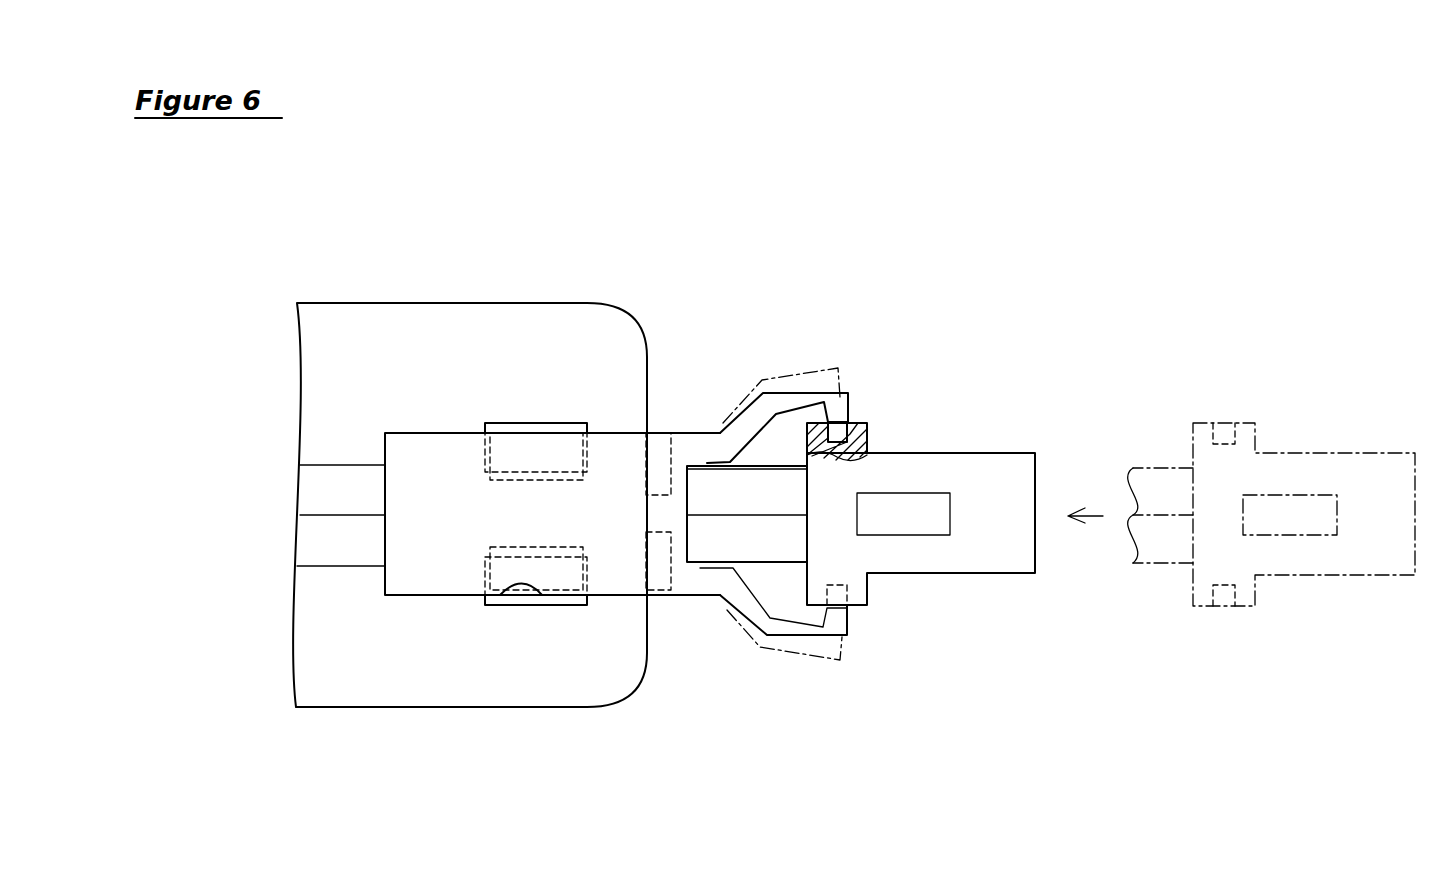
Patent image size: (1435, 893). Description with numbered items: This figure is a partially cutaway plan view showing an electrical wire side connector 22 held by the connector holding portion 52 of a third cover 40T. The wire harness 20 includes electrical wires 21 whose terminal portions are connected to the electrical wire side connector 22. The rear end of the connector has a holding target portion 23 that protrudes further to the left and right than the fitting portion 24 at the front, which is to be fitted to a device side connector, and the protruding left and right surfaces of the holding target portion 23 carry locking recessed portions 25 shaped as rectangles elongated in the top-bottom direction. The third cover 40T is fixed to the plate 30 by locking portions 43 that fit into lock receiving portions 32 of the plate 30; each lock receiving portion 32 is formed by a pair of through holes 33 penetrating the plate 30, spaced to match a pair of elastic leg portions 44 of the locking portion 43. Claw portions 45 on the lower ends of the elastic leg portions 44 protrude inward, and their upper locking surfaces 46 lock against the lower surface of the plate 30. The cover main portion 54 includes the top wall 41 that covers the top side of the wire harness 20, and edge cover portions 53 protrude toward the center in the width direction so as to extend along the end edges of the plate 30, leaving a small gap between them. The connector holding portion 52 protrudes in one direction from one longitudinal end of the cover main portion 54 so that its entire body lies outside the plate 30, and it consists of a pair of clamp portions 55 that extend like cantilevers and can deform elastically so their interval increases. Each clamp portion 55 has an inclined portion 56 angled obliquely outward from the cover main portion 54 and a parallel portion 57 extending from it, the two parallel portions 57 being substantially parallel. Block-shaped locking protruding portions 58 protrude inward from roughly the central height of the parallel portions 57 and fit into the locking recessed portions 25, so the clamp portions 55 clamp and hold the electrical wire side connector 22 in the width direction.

The wire harness 20 is at (343, 434).
The electrical wires 21 is at (327, 542).
The electrical wire side connector 22 is at (1005, 455).
The holding target portion 23 is at (863, 595).
The fitting portion 24 is at (1020, 573).
The locking recessed portions 25 is at (848, 405).
The plate 30 is at (473, 313).
The lock receiving portion 32 is at (562, 394).
The through holes 33 is at (500, 595).
The third cover 40T is at (617, 450).
The top wall 41 is at (432, 453).
The locking portion 43 is at (619, 565).
The elastic leg portions 44 is at (573, 447).
The claw portions 45 is at (577, 487).
The locking surfaces 46 is at (557, 552).
The connector holding portion 52 is at (764, 403).
The edge cover portions 53 is at (663, 477).
The cover main portion 54 is at (432, 572).
The clamp portions 55 is at (797, 622).
The inclined portions 56 is at (744, 607).
The parallel portions 57 is at (817, 620).
The locking protruding portions 58 is at (840, 432).